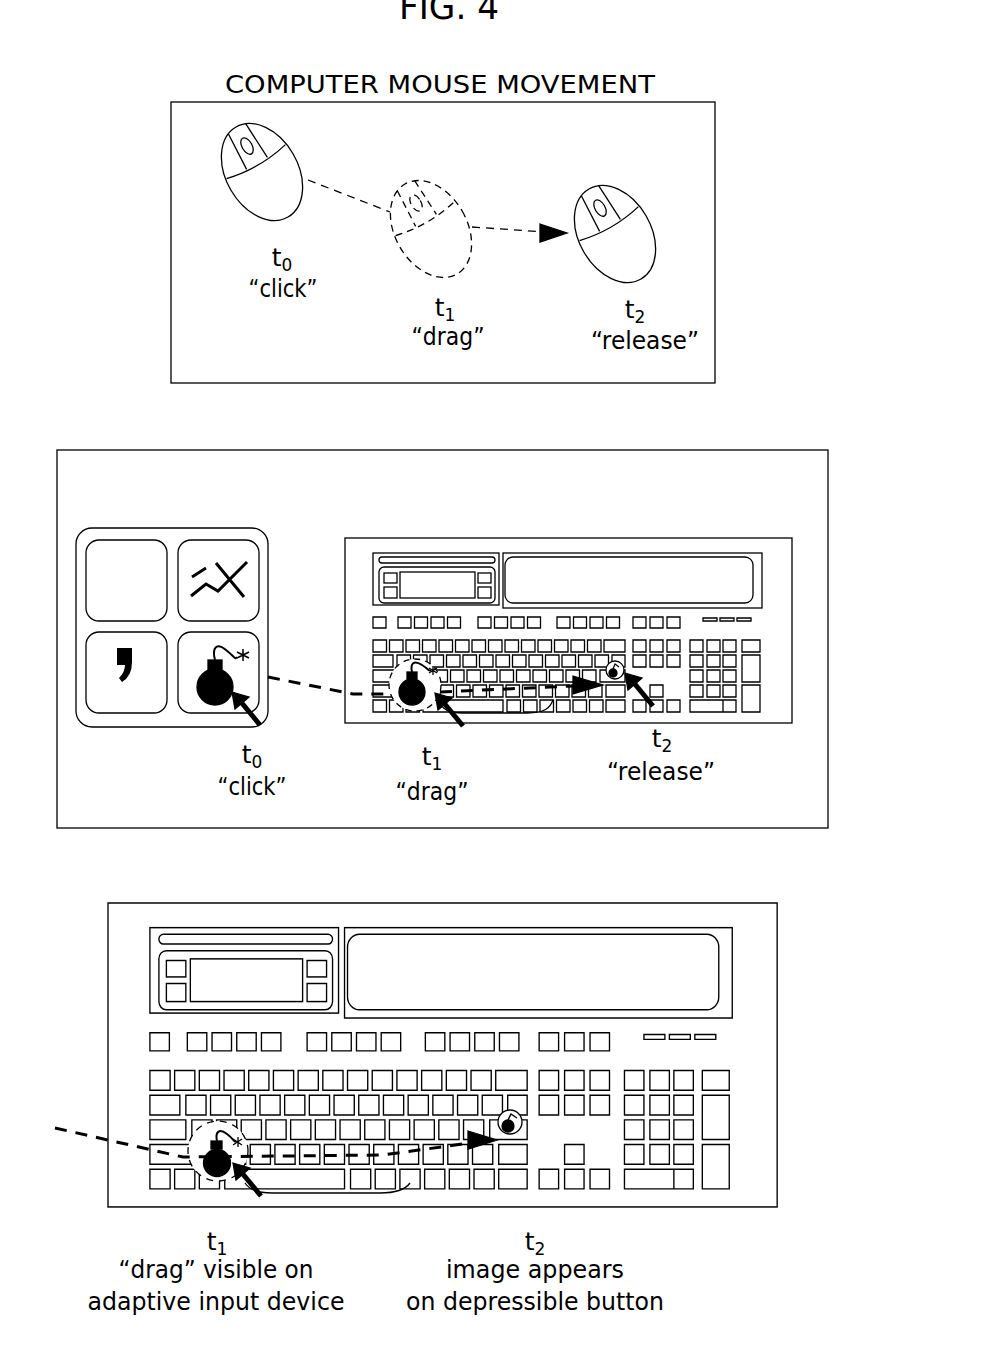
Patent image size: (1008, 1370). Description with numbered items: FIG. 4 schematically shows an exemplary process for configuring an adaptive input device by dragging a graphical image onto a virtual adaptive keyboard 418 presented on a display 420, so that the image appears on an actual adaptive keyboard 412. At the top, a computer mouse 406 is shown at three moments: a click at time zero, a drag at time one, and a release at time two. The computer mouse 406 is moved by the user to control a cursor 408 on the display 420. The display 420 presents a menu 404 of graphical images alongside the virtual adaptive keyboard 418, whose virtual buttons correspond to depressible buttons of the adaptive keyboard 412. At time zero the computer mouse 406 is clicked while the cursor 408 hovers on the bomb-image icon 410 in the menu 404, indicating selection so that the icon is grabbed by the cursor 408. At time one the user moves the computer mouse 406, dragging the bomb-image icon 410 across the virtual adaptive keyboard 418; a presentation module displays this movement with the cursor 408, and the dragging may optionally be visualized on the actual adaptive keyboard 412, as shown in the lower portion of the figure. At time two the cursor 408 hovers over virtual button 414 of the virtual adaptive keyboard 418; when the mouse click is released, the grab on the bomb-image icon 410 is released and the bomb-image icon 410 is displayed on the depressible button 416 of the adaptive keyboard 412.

The menu 404 is at (213, 528).
The computer mouse 406 is at (297, 162).
The cursor 408 is at (238, 693).
The bomb-image icon 410 is at (247, 633).
The adaptive keyboard 412 is at (777, 962).
The virtual button 414 is at (616, 680).
The depressible button 416 is at (523, 1128).
The virtual adaptive keyboard 418 is at (793, 577).
The display 420 is at (723, 448).